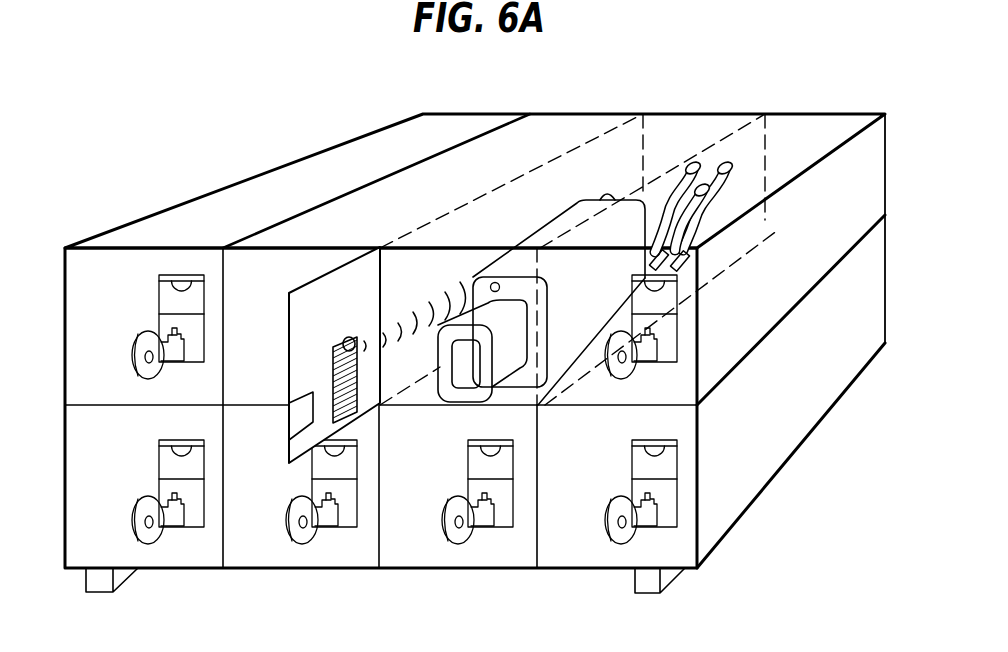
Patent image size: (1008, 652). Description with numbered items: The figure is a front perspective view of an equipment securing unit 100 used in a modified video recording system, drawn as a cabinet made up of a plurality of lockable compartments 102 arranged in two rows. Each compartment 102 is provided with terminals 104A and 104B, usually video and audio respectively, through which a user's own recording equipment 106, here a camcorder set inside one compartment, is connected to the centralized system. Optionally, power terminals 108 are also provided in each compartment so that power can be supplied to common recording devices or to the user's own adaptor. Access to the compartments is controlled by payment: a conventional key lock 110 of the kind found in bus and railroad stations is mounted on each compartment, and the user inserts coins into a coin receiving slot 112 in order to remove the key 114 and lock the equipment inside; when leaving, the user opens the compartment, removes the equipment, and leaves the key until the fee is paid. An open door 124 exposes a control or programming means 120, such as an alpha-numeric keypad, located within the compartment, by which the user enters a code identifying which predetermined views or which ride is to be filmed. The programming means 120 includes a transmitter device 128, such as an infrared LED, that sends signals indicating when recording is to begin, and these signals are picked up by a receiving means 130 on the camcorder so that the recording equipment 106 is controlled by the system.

The equipment securing unit 100 is at (475, 319).
The lockable compartment 102 is at (663, 140).
The terminal 104A is at (692, 165).
The terminal 104B is at (728, 163).
The recording equipment 106 is at (525, 298).
The power terminal 108 is at (740, 173).
The key lock 110 is at (149, 526).
The coin receiving slot 112 is at (159, 462).
The key 114 is at (135, 520).
The control or programming means 120 is at (333, 348).
The door 124 is at (337, 355).
The transmitter device 128 is at (355, 345).
The receiving means 130 is at (489, 285).